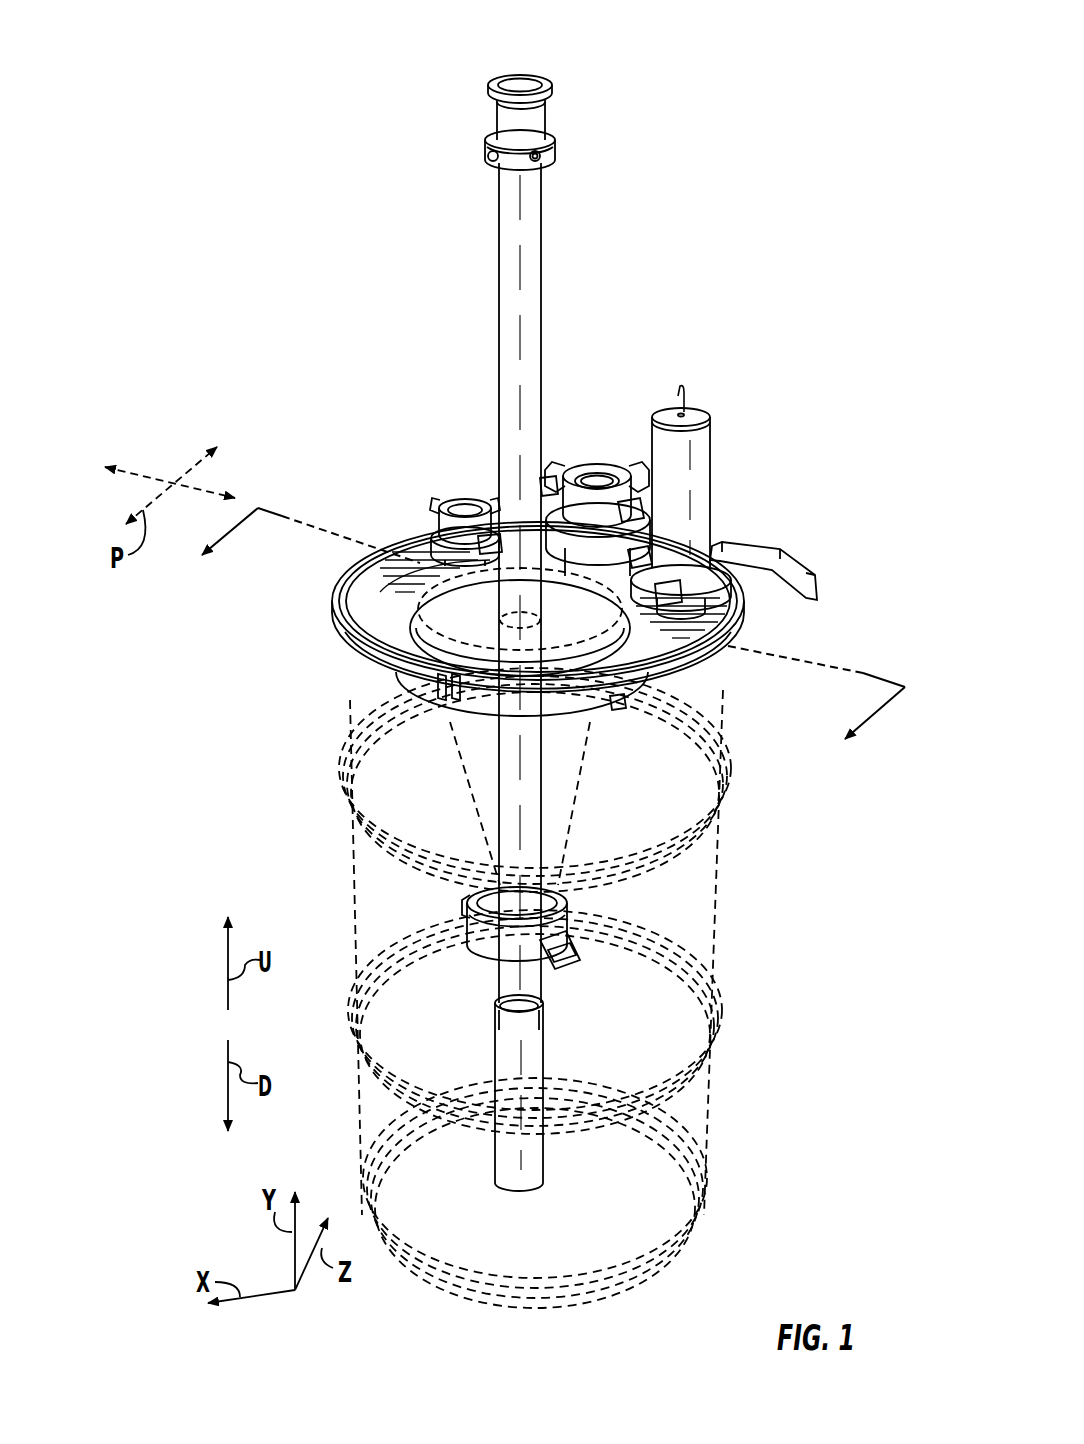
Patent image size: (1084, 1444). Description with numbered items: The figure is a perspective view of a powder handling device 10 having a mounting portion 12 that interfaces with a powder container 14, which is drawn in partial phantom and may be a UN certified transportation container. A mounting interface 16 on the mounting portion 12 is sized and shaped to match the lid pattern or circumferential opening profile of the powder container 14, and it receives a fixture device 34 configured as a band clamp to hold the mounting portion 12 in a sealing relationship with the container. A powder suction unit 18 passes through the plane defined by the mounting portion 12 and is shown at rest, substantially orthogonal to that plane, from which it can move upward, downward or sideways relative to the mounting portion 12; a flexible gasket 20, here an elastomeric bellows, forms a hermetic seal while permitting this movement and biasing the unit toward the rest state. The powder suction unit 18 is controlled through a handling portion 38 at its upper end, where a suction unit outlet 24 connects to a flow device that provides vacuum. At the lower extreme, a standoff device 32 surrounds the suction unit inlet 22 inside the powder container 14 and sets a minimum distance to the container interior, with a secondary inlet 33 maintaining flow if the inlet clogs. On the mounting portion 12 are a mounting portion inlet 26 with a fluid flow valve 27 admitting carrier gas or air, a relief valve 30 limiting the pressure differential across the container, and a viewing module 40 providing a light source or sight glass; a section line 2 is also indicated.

The powder handling device 10 is at (820, 135).
The mounting portion 12 is at (504, 551).
The powder container 14 is at (680, 898).
The mounting interface 16 is at (345, 580).
The powder suction unit 18 is at (528, 298).
The flexible gasket 20 is at (468, 757).
The suction unit inlet 22 is at (521, 1188).
The suction unit outlet 24 is at (548, 68).
The mounting portion inlet 26 is at (596, 461).
The fluid flow valve 27 is at (604, 488).
The relief valve 30 is at (460, 499).
The standoff device 32 is at (535, 1105).
The secondary inlet 33 is at (545, 1014).
The fixture device 34 is at (768, 553).
The handling portion 38 is at (505, 215).
The viewing module 40 is at (700, 450).
The section line 2 is at (541, 636).